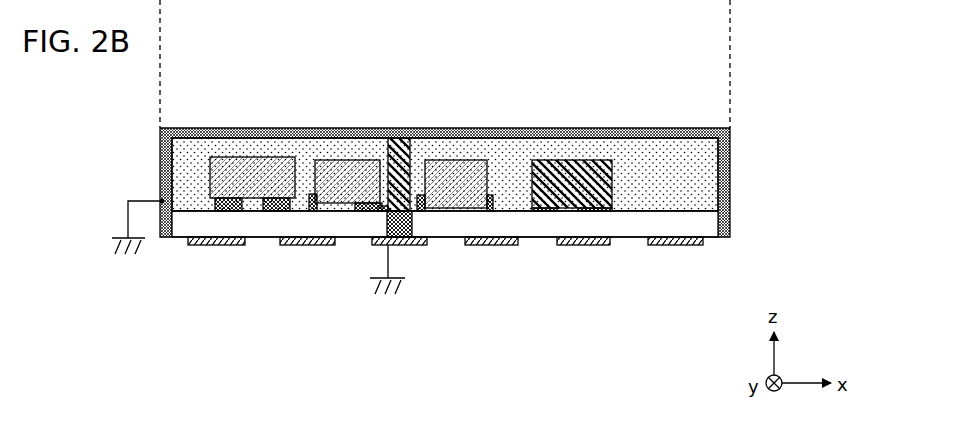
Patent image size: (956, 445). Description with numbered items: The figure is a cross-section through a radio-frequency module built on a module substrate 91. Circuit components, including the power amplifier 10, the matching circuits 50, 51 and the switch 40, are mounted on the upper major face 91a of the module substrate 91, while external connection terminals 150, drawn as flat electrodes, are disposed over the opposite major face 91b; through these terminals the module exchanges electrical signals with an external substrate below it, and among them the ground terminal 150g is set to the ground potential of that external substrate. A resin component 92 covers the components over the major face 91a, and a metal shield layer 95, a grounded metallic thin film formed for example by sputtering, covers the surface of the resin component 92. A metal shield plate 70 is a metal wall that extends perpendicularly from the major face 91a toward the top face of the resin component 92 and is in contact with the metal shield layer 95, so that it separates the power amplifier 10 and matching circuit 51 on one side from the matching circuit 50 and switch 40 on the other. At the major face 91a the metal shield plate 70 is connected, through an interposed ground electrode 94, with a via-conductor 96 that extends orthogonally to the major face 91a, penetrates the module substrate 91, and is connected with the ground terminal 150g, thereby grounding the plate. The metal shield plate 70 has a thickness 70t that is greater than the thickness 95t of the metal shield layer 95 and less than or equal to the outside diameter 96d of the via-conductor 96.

The power amplifier 10 is at (255, 168).
The matching circuit 51 is at (320, 166).
The metal shield plate 70 is at (396, 146).
The thickness of metal shield plate 70t is at (360, 150).
The matching circuit 50 is at (478, 168).
The switch 40 is at (568, 168).
The metal shield layer 95 is at (660, 130).
The thickness of metal shield layer 95t is at (508, 105).
The resin component 92 is at (706, 152).
The module substrate 91 is at (712, 226).
The major face of module substrate 91a is at (715, 209).
The major face of module substrate 91b is at (714, 240).
The ground electrode 94 is at (384, 211).
The via-conductor 96 is at (410, 232).
The outside diameter of via-conductor 96d is at (358, 223).
The external connection terminal 150 is at (308, 247).
The ground terminal 150g is at (211, 247).